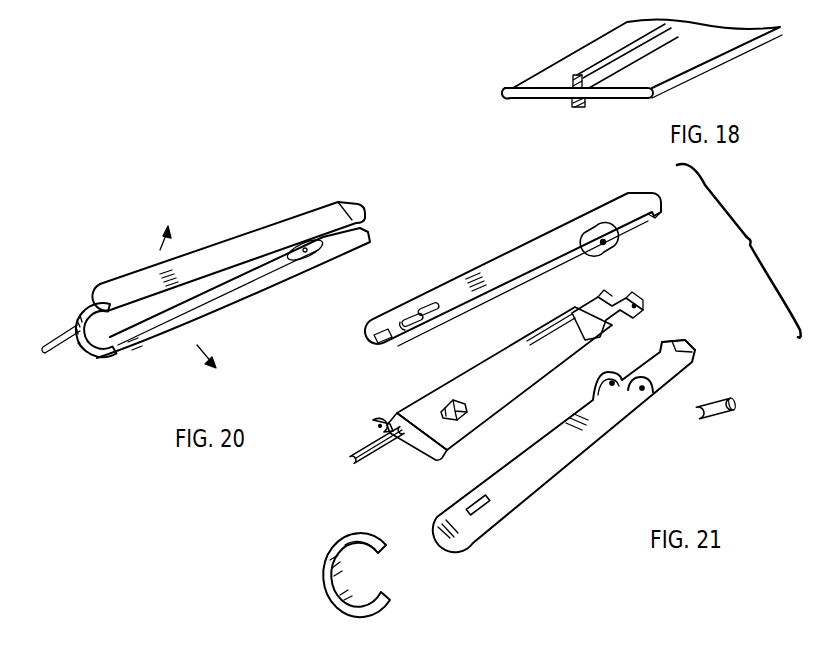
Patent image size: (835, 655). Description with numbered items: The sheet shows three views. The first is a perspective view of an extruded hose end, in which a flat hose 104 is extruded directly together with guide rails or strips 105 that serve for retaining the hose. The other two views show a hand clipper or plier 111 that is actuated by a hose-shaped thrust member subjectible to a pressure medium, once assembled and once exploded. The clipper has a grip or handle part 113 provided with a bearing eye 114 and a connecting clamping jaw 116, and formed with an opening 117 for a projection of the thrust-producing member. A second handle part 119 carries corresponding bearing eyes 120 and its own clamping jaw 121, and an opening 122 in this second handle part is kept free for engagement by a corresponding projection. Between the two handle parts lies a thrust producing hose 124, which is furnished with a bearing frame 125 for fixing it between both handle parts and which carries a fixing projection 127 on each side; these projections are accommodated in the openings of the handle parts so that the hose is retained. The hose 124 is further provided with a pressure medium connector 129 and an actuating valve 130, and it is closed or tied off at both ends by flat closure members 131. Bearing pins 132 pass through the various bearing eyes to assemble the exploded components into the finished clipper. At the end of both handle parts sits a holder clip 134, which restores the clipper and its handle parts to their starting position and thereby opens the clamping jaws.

In FIG. 18, the flat hose 104 is at (680, 62).
In FIG. 18, the guide rails or strips 105 is at (577, 75).
In FIG. 20, the hand clipper or plier 111 is at (213, 213).
In FIG. 20, the grip or handle part 113 is at (143, 282).
In FIG. 21, the grip or handle part 113 is at (490, 270).
In FIG. 21, the bearing eye 114 is at (613, 244).
In FIG. 21, the connecting clamping jaw 116 is at (661, 213).
In FIG. 21, the opening 117 is at (417, 308).
In FIG. 20, the second handle part 119 is at (135, 345).
In FIG. 21, the second handle part 119 is at (558, 455).
In FIG. 21, the bearing eyes 120 is at (642, 391).
In FIG. 21, the clamping jaw 121 is at (697, 343).
In FIG. 21, the opening 122 is at (483, 505).
In FIG. 21, the thrust producing hose 124 is at (427, 412).
In FIG. 21, the bearing frame 125 is at (640, 313).
In FIG. 21, the fixing projection 127 is at (455, 397).
In FIG. 21, the pressure medium connector 129 is at (365, 450).
In FIG. 21, the actuating valve 130 is at (382, 420).
In FIG. 21, the flat closure members 131 is at (430, 445).
In FIG. 21, the bearing pins 132 is at (729, 404).
In FIG. 21, the holder clip 134 is at (332, 587).